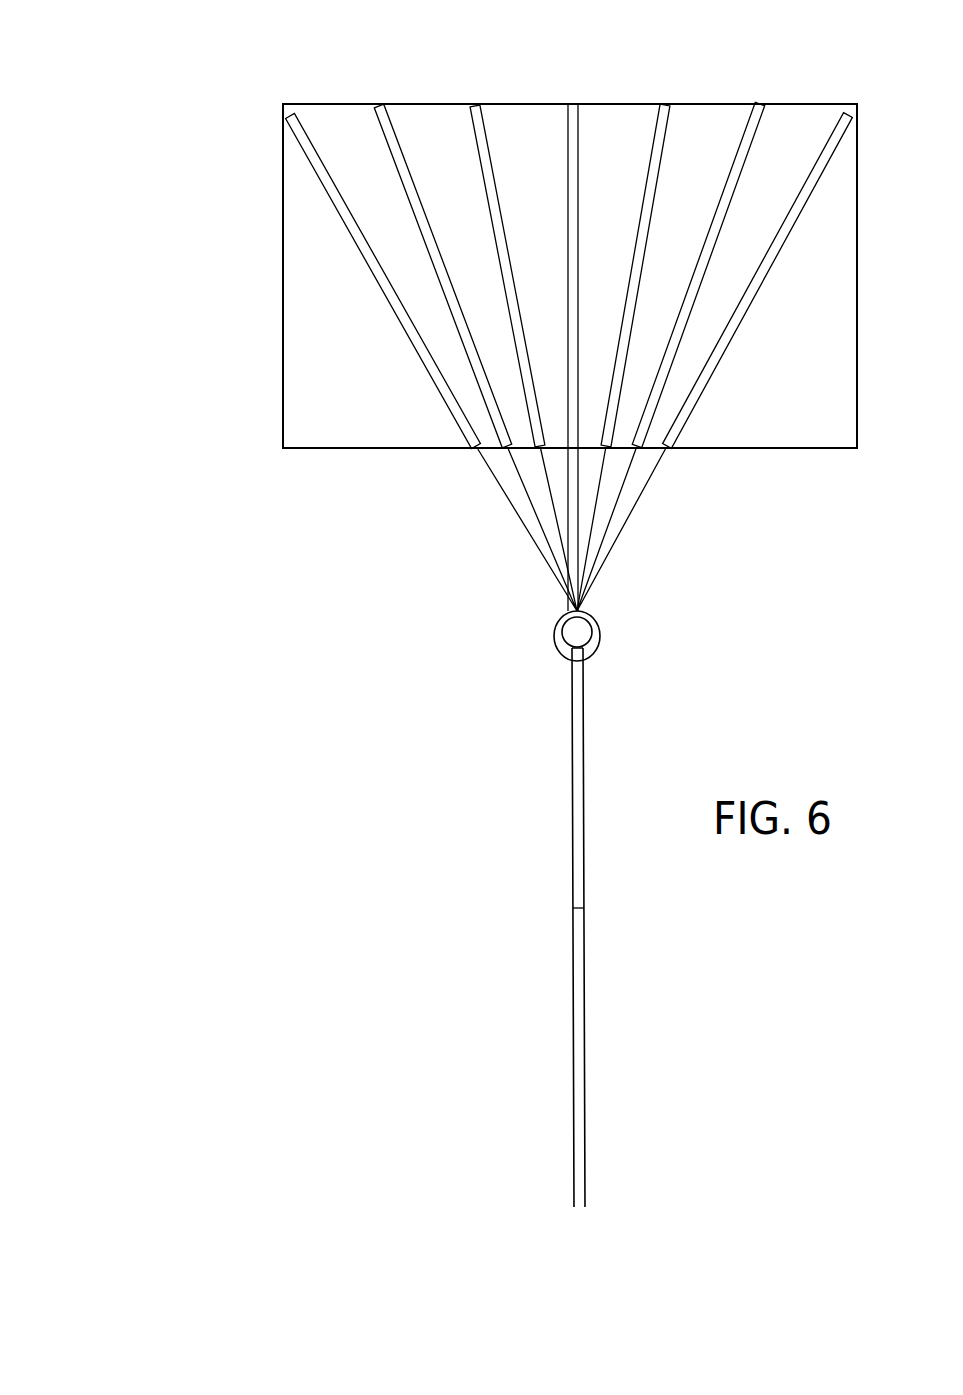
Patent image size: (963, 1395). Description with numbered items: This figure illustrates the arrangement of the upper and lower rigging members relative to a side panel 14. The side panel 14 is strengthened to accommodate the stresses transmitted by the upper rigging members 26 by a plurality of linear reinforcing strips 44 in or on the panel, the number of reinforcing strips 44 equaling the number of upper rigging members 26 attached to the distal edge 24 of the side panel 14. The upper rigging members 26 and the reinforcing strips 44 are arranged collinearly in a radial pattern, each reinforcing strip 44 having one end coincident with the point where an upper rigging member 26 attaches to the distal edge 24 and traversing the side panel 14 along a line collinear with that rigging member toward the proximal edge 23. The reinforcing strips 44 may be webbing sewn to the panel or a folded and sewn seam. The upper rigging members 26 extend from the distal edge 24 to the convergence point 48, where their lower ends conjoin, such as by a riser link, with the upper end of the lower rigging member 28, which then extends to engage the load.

The side panel 14 is at (337, 337).
The proximal edge 23 is at (705, 102).
The distal edge 24 is at (762, 450).
The upper rigging member 26 is at (500, 492).
The lower rigging member 28 is at (574, 705).
The reinforcing strip 44 is at (407, 178).
The convergence point 48 is at (600, 620).